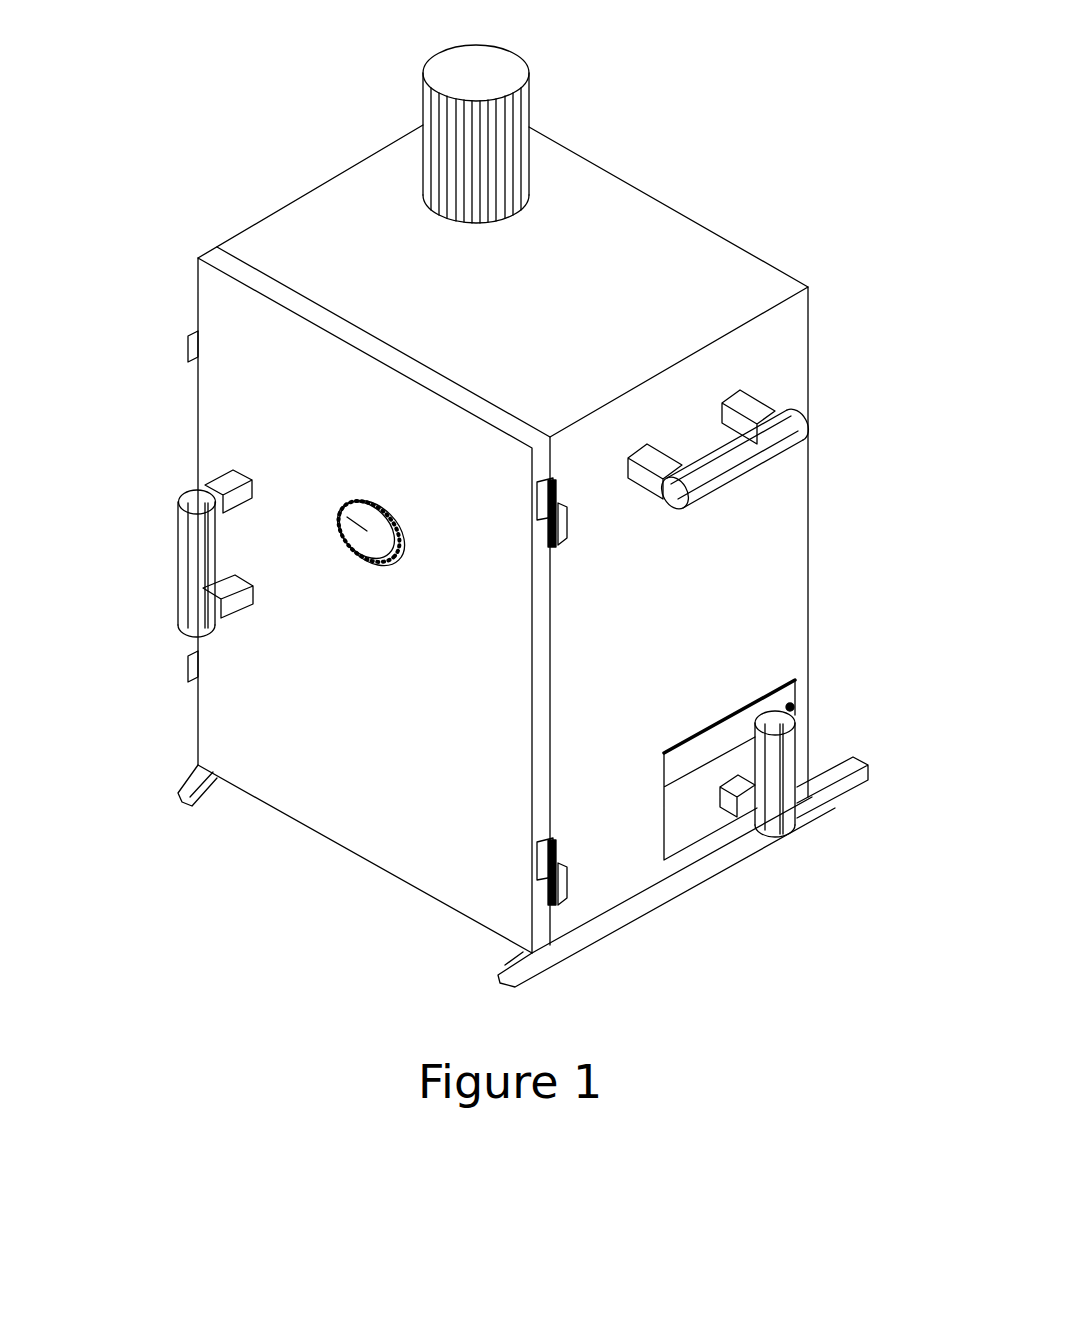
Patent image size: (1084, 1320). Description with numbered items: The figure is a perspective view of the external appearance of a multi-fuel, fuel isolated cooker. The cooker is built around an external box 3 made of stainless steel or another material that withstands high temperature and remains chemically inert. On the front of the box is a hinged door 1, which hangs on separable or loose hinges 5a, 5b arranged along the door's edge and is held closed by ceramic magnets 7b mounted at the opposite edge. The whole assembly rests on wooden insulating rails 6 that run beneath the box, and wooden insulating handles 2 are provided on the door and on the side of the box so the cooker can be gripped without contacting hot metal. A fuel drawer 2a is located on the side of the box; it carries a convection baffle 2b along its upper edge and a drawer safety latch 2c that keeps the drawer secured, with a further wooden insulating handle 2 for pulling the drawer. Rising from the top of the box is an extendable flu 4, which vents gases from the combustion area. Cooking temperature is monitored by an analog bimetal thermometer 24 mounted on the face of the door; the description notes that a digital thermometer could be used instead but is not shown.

The hinged door 1 is at (300, 713).
The wooden insulating handles 2 is at (180, 568).
The fuel drawer 2a is at (697, 818).
The convection baffle 2b is at (782, 694).
The drawer safety latch 2c is at (796, 712).
The external box 3 is at (693, 240).
The extendable flu 4 is at (517, 115).
The separable or loose hinge 5a is at (568, 888).
The separable or loose hinge 5b is at (545, 862).
The wooden insulating rails 6 is at (862, 776).
The ceramic magnets 7b is at (188, 343).
The analog bimetal thermometer 24 is at (345, 517).